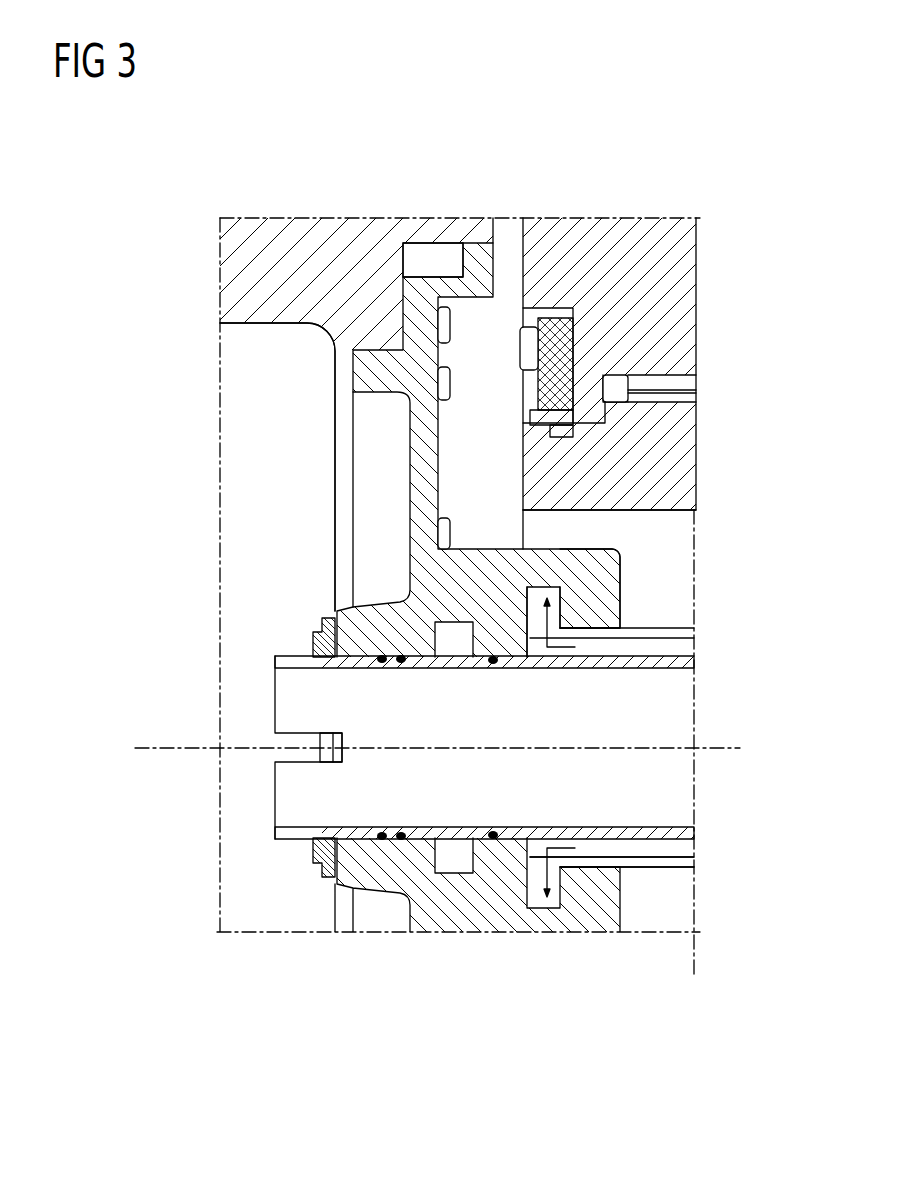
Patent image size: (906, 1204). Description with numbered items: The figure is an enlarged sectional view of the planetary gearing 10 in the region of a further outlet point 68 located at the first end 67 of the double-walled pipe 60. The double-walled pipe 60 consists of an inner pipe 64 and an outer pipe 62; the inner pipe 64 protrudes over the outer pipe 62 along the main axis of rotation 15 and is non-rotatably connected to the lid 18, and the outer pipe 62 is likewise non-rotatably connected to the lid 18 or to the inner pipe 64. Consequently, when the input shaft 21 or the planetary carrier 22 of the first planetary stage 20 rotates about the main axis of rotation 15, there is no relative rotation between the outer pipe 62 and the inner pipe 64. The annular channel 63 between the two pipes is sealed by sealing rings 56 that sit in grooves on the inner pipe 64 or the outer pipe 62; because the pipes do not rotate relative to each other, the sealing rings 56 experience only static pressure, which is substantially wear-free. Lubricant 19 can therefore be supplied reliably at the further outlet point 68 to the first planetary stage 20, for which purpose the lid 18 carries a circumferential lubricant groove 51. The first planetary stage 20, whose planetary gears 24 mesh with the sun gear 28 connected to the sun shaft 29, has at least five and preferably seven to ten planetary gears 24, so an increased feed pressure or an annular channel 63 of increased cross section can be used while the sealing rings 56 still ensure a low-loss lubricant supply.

The planetary gearing 10 is at (584, 130).
The main axis of rotation 15 is at (143, 748).
The lid 18 is at (434, 450).
The lubricant 19 is at (565, 657).
The first planetary stage 20 is at (158, 257).
The input shaft 21 is at (320, 232).
The planetary carrier 22 is at (320, 232).
The planetary gears 24 is at (646, 205).
The sun gear 28 is at (678, 297).
The sun shaft 29 is at (678, 438).
The circumferential lubricant groove 51 is at (555, 588).
The sealing rings 56 is at (580, 628).
The double-walled pipe 60 is at (694, 830).
The outer pipe 62 is at (693, 633).
The annular channel 63 is at (693, 650).
The inner pipe 64 is at (693, 663).
The first end 67 is at (694, 932).
The further outlet point 68 is at (542, 657).